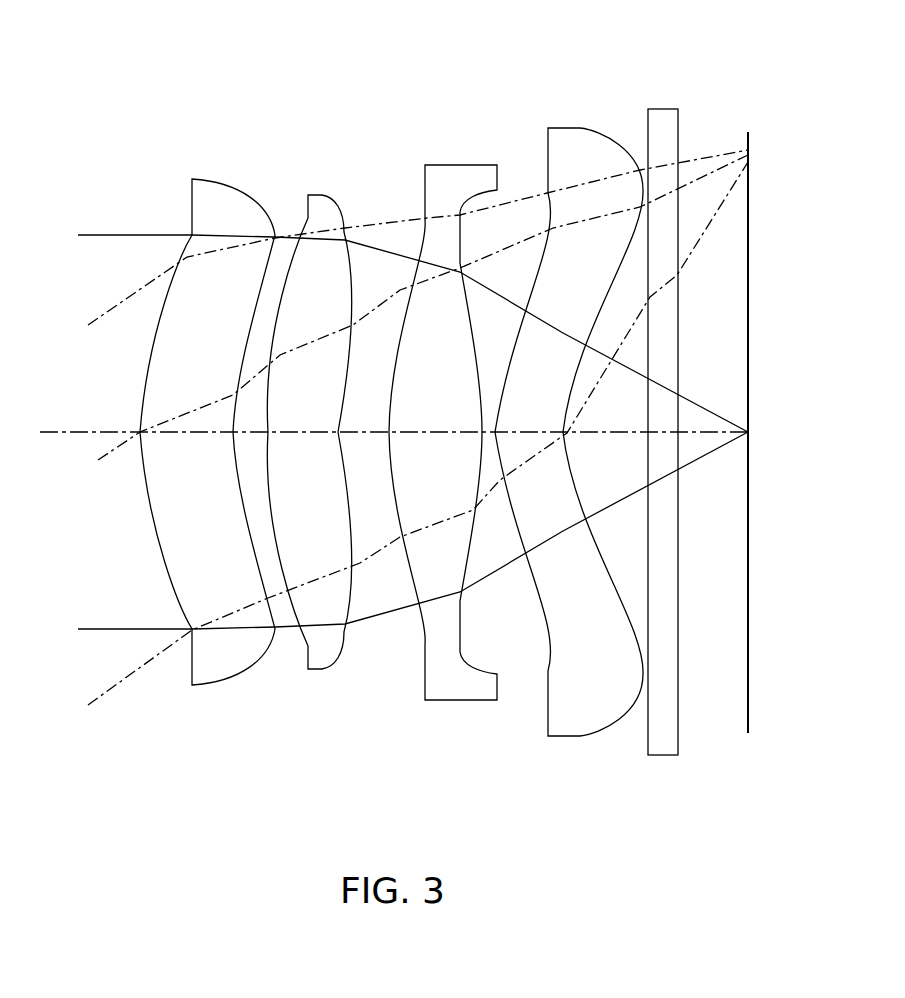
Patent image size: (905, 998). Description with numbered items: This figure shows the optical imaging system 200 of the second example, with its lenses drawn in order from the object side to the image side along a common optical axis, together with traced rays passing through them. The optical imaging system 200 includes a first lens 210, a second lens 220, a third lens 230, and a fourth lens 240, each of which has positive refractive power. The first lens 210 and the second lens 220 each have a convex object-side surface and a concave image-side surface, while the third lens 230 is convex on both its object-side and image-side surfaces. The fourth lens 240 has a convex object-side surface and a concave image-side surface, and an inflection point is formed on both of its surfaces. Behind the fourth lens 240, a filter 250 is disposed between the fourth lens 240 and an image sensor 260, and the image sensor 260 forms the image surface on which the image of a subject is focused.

The optical imaging system 200 is at (400, 88).
The first lens 210 is at (223, 684).
The second lens 220 is at (320, 670).
The third lens 230 is at (460, 701).
The fourth lens 240 is at (563, 737).
The filter 250 is at (663, 756).
The image sensor 260 is at (748, 716).